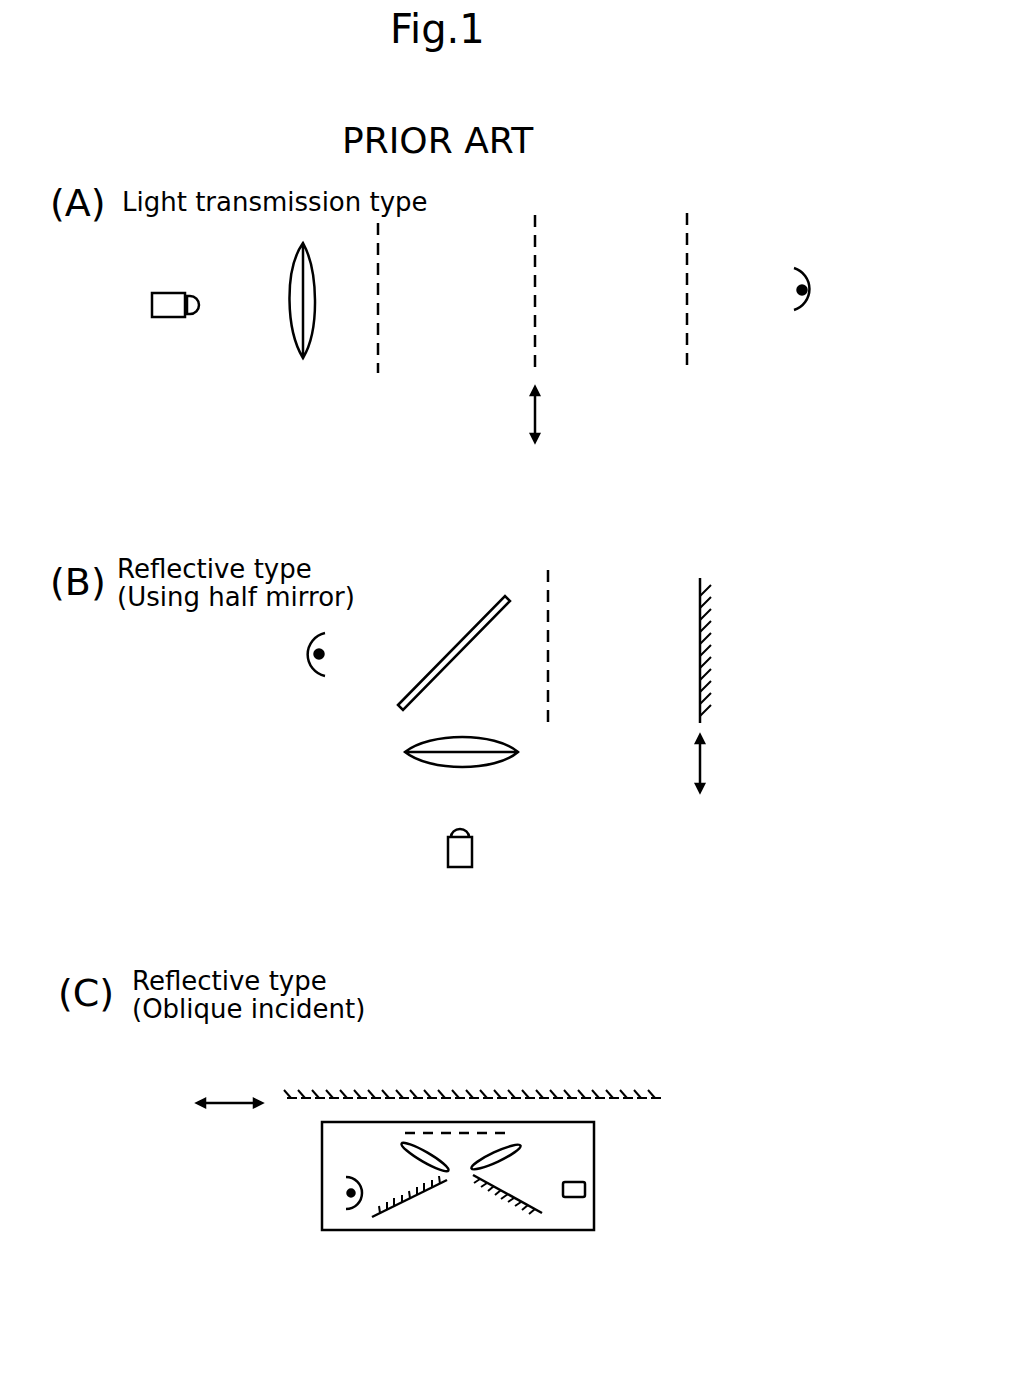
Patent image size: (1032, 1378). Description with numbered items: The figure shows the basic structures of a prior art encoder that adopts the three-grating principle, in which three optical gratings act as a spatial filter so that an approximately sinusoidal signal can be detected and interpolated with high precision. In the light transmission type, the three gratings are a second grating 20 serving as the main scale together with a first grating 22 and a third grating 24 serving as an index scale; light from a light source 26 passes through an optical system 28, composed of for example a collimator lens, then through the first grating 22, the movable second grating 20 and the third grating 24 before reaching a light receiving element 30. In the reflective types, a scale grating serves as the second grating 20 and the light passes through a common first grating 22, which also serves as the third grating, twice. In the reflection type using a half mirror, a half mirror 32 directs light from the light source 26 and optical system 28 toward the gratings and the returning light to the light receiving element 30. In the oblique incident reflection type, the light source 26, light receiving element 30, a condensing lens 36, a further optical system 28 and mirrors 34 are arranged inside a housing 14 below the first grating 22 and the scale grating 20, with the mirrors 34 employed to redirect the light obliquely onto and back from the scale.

The housing 14 is at (322, 1165).
The second grating 20 is at (535, 366).
The first grating 22 is at (378, 370).
The third grating 24 is at (687, 362).
The light source 26 is at (165, 317).
The optical system 28 is at (285, 340).
The light receiving element 30 is at (820, 290).
The half mirror 32 is at (470, 622).
The mirror 34 is at (372, 1213).
The condensing lens 36 is at (403, 1147).